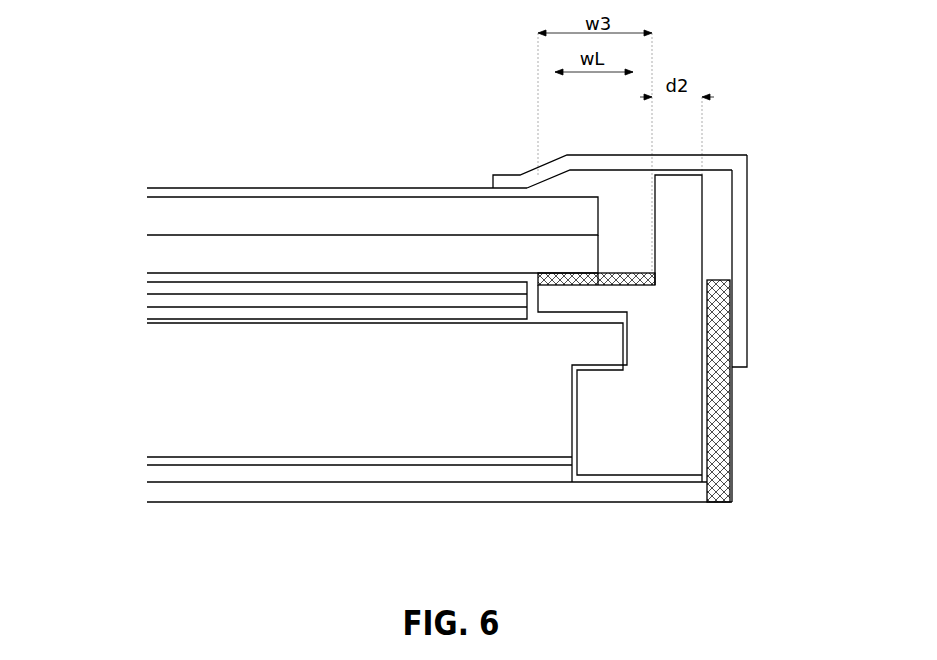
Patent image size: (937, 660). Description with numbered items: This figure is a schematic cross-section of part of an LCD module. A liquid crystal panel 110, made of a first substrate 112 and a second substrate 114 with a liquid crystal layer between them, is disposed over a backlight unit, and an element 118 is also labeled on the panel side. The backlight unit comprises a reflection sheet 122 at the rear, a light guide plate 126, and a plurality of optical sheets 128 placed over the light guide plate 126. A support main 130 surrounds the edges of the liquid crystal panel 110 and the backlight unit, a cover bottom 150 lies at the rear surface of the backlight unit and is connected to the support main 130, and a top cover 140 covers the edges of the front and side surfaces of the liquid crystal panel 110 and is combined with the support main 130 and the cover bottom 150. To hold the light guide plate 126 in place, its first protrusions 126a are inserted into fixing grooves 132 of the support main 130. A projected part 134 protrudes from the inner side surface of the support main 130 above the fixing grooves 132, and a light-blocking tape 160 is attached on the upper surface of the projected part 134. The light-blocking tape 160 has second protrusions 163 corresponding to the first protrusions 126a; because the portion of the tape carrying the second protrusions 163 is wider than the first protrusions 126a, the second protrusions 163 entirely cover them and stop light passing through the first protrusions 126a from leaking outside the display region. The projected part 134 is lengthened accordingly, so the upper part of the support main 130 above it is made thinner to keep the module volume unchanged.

The liquid crystal panel 110 is at (268, 96).
The first substrate 112 is at (252, 246).
The second substrate 114 is at (196, 213).
The electrode layer 118 is at (405, 248).
The reflection sheet 122 is at (146, 485).
The light guide plate 126 is at (146, 457).
The first protrusions 126a is at (620, 479).
The optical sheets 128 is at (147, 316).
The support main 130 is at (736, 372).
The fixing grooves 132 is at (646, 504).
The projected part 134 is at (718, 302).
The top cover 140 is at (716, 155).
The cover bottom 150 is at (733, 425).
The light-blocking tape 160 is at (705, 245).
The second protrusions 163 is at (650, 281).